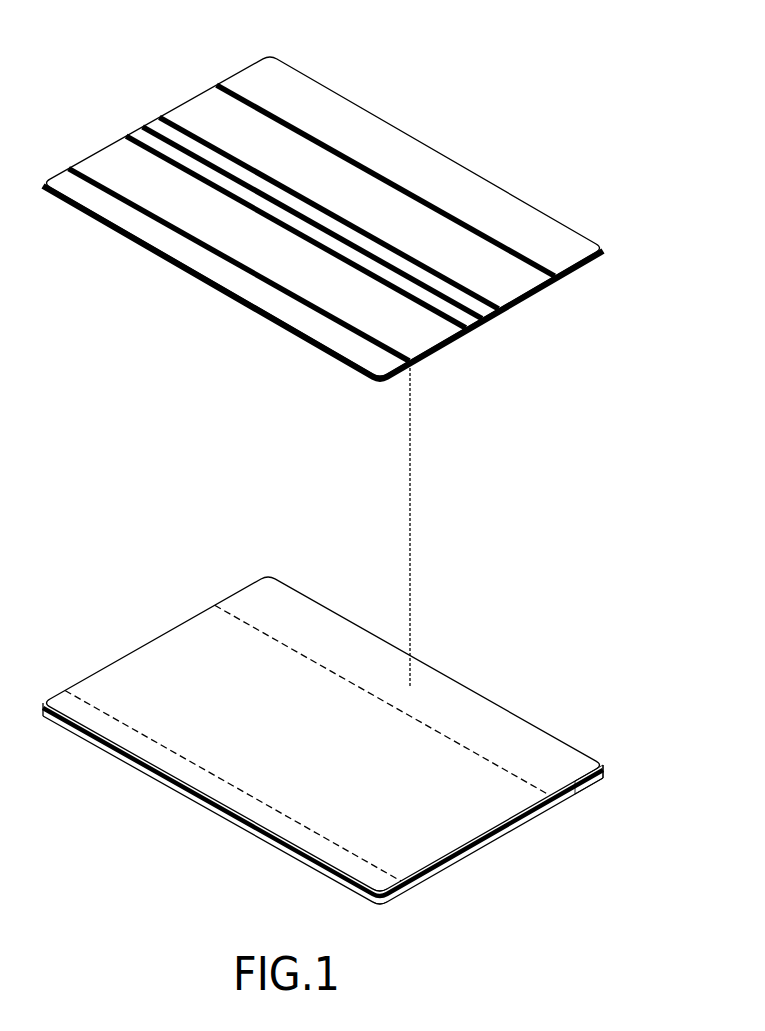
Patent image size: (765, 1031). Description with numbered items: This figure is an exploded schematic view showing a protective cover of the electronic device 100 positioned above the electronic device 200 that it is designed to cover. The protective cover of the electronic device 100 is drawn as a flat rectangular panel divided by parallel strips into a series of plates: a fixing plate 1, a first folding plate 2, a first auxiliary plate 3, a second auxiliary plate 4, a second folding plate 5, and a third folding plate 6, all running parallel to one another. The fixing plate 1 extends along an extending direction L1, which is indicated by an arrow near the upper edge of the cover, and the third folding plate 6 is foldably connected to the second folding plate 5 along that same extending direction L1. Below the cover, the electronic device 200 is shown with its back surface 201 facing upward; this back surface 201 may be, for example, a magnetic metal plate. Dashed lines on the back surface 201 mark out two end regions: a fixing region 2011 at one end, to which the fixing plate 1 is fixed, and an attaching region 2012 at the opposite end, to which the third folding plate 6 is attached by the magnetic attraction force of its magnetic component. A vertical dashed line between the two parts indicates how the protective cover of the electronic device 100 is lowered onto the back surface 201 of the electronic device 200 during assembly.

The protective cover of the electronic device 100 is at (335, 201).
The electronic device 200 is at (353, 723).
The fixing plate 1 is at (568, 257).
The first folding plate 2 is at (507, 292).
The first auxiliary plate 3 is at (477, 312).
The second auxiliary plate 4 is at (460, 323).
The second folding plate 5 is at (412, 347).
The third folding plate 6 is at (255, 299).
The back surface 201 is at (467, 838).
The fixing region 2011 is at (565, 775).
The attaching region 2012 is at (380, 887).
The extending direction L1 is at (480, 147).